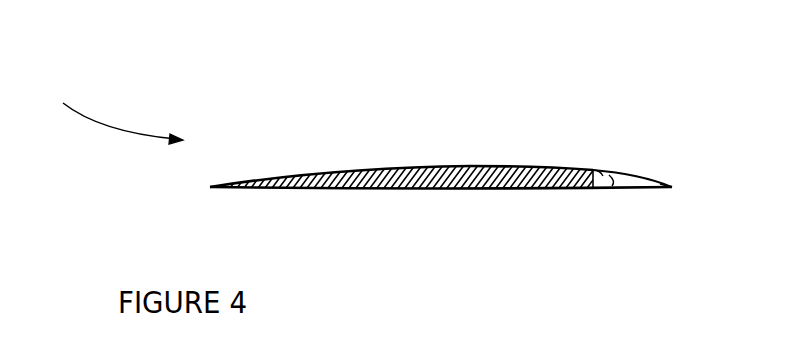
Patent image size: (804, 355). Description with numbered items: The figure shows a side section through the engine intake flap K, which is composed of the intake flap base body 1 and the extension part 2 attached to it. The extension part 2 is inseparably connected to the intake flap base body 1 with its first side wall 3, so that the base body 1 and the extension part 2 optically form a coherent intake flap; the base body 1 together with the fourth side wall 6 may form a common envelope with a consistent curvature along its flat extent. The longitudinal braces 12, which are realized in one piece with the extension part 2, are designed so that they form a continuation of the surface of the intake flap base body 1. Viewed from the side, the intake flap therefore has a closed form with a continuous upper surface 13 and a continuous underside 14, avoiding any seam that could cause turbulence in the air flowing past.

The engine intake flap K is at (113, 113).
The intake flap base body 1 is at (403, 189).
The extension part 2 is at (672, 192).
The first side wall 3 is at (605, 168).
The fourth side wall 6 is at (612, 180).
The longitudinal braces 12 is at (636, 164).
The continuous upper surface 13 is at (299, 158).
The continuous underside 14 is at (284, 199).